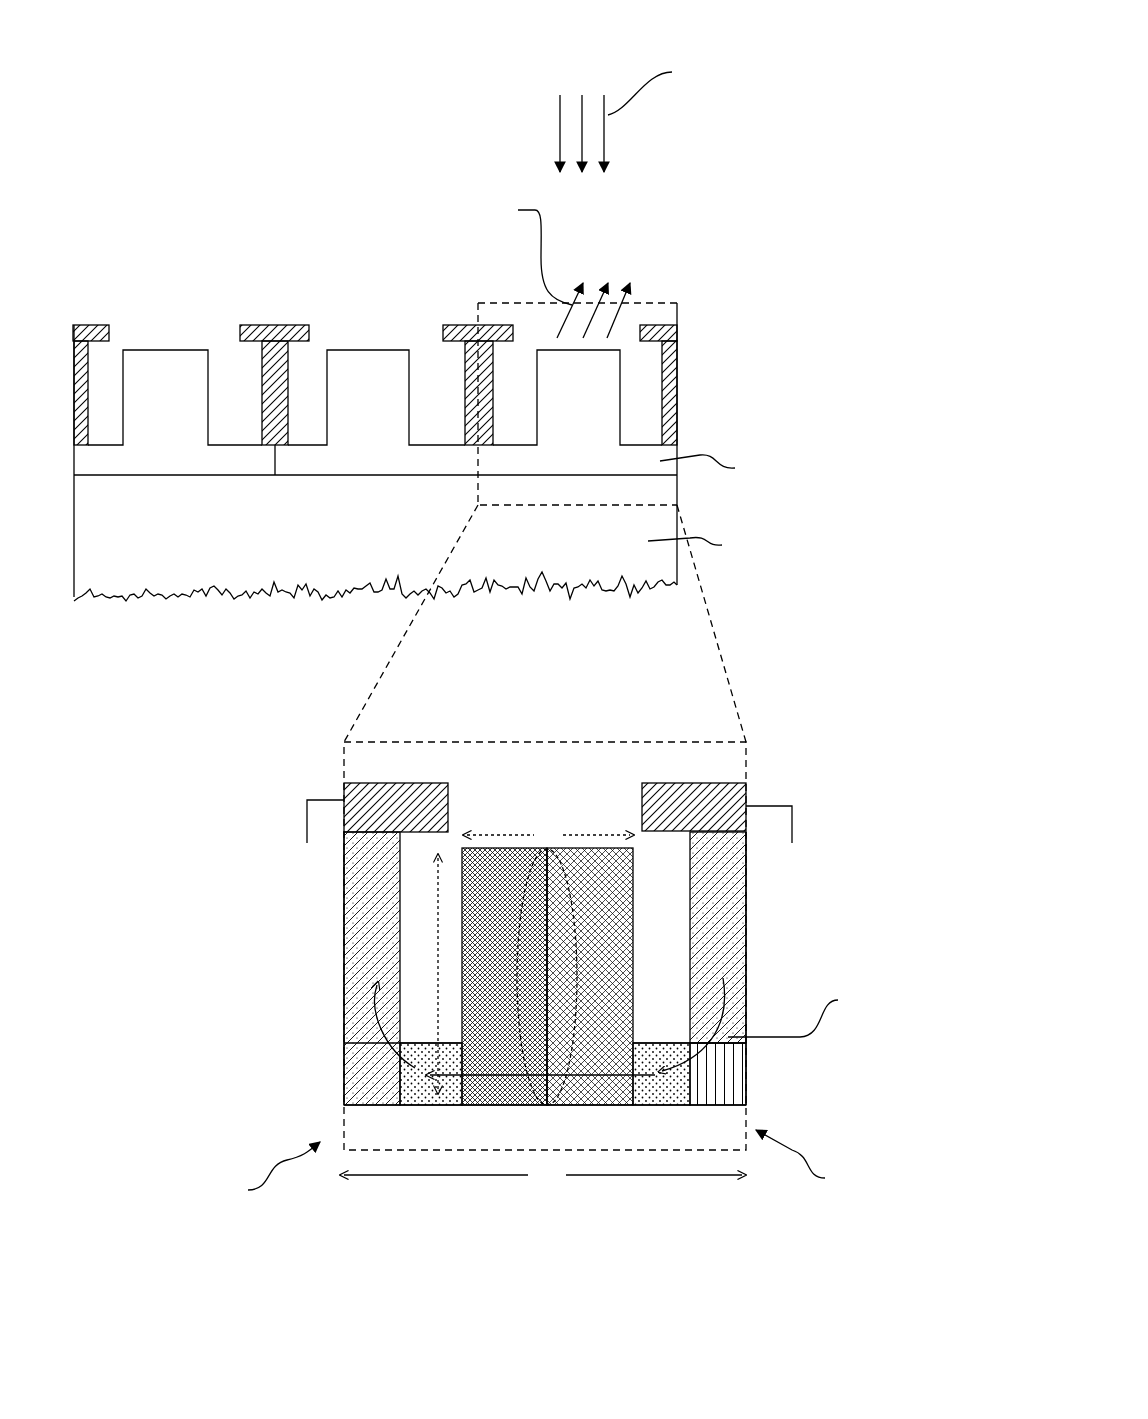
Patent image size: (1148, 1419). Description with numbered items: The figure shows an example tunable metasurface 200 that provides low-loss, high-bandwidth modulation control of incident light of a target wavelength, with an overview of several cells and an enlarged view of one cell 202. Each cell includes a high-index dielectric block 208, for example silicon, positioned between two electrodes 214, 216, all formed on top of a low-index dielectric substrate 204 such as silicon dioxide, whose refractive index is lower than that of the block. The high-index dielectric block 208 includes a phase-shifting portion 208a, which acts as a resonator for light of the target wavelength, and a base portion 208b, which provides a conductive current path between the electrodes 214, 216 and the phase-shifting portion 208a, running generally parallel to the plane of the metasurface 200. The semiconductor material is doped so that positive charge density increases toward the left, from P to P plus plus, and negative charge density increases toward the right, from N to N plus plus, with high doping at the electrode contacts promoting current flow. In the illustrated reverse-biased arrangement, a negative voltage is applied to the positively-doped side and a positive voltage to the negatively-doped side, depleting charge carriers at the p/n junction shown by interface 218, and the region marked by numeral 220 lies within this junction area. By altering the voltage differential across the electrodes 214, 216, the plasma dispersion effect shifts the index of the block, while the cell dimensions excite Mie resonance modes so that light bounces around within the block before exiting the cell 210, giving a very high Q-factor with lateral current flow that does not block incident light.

The tunable metasurface 200 is at (150, 75).
The cell 202 is at (668, 287).
The low-index dielectric substrate 204 is at (311, 529).
The high-index dielectric block 208 is at (630, 409).
The phase-shifting portion 208a is at (547, 727).
The base portion 208b is at (545, 775).
The cell 210 is at (323, 720).
The electrode 214 is at (746, 790).
The electrode 216 is at (345, 790).
The interface 218 is at (568, 912).
The depletion region 220 is at (548, 1037).